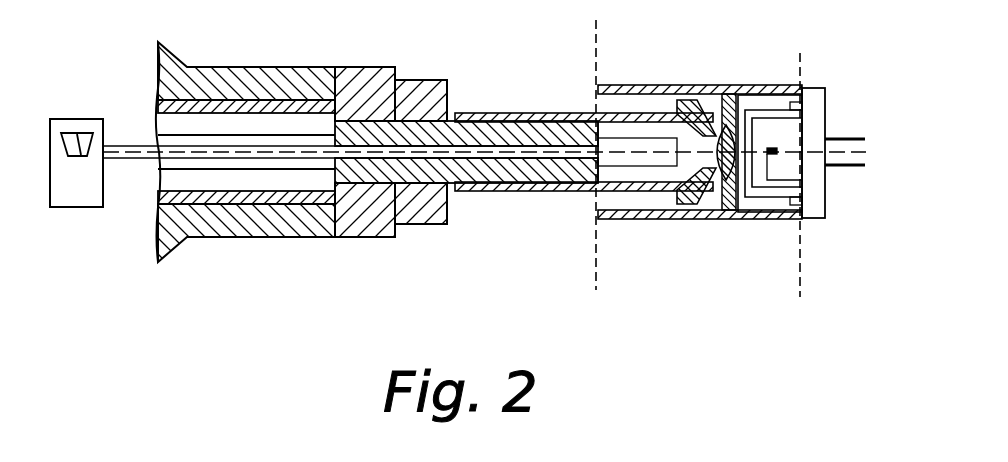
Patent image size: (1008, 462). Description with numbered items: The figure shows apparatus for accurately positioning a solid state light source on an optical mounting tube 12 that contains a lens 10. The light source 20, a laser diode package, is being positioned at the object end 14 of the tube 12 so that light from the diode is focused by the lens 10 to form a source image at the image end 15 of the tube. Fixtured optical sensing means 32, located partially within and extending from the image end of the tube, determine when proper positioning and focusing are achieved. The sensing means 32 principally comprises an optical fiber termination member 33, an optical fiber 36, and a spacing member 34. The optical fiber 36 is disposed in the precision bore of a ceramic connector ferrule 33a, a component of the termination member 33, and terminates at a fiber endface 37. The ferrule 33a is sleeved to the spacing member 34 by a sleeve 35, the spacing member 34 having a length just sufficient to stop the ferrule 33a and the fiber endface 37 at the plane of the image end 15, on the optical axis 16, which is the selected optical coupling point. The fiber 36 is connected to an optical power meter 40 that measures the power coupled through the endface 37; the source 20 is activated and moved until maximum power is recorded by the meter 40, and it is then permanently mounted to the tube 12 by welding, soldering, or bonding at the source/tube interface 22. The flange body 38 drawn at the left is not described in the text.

The lens 10 is at (716, 123).
The optical mounting tube 12 is at (710, 219).
The object end 14 is at (813, 189).
The image end 15 is at (596, 171).
The optical axis 16 is at (614, 157).
The light source 20 is at (818, 110).
The source/tube interface 22 is at (802, 220).
The optical sensing means 32 is at (494, 86).
The optical fiber termination member 33 is at (372, 78).
The ceramic connector ferrule 33a is at (402, 135).
The spacing member 34 is at (690, 112).
The sleeve 35 is at (634, 117).
The optical fiber 36 is at (509, 153).
The fiber endface 37 is at (598, 154).
The flange body 38 is at (245, 152).
The optical power meter 40 is at (77, 119).